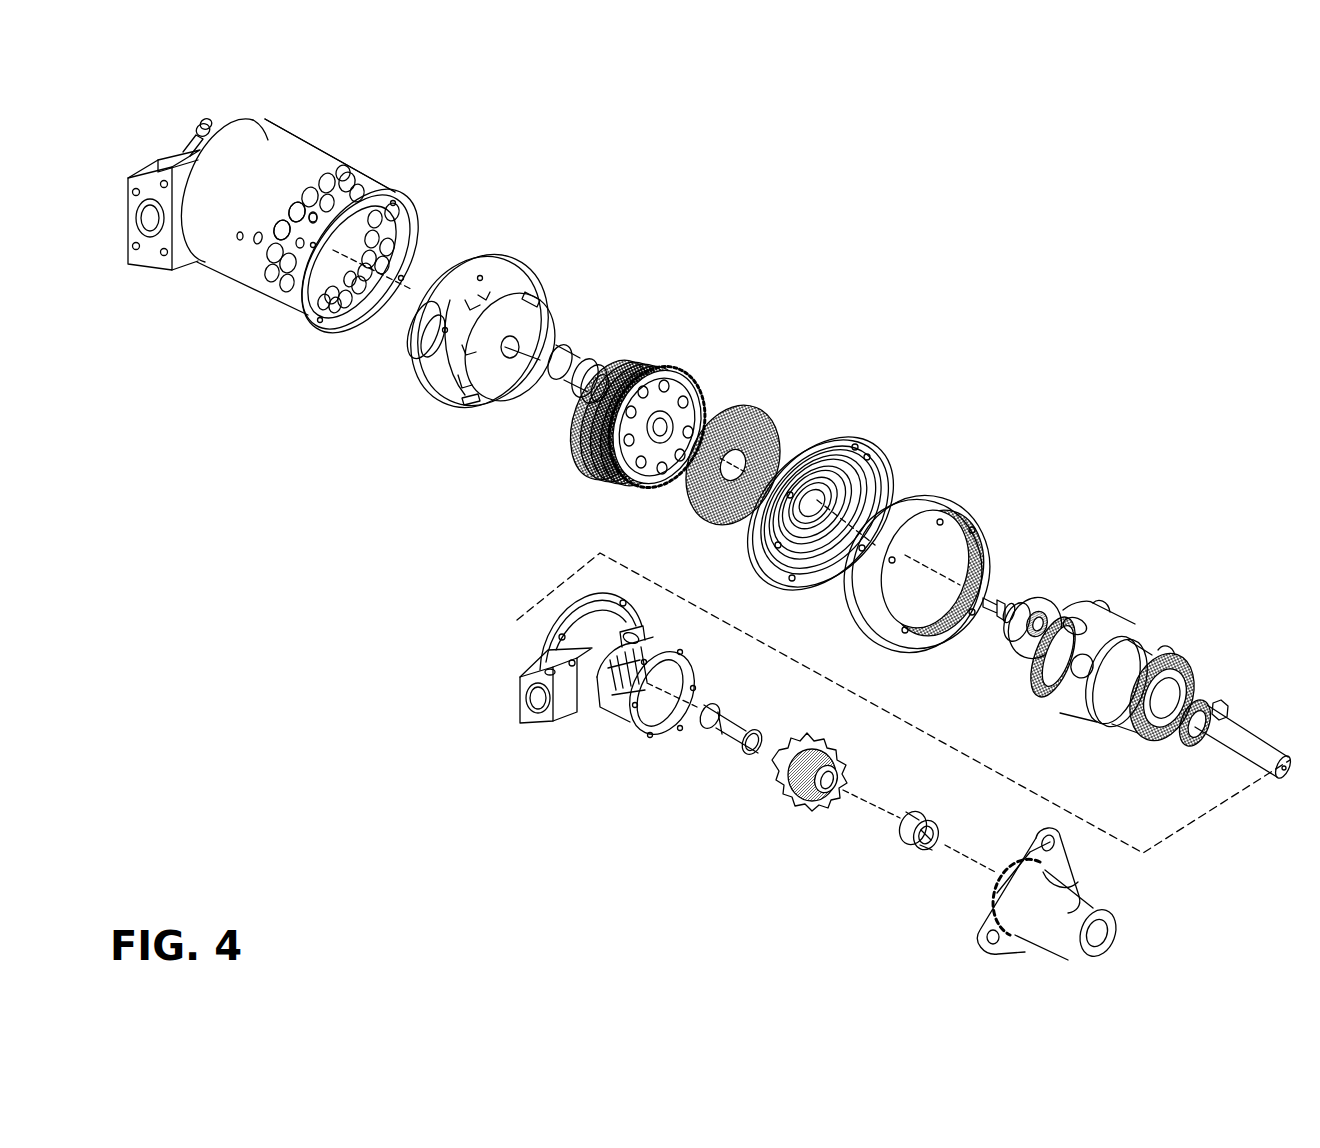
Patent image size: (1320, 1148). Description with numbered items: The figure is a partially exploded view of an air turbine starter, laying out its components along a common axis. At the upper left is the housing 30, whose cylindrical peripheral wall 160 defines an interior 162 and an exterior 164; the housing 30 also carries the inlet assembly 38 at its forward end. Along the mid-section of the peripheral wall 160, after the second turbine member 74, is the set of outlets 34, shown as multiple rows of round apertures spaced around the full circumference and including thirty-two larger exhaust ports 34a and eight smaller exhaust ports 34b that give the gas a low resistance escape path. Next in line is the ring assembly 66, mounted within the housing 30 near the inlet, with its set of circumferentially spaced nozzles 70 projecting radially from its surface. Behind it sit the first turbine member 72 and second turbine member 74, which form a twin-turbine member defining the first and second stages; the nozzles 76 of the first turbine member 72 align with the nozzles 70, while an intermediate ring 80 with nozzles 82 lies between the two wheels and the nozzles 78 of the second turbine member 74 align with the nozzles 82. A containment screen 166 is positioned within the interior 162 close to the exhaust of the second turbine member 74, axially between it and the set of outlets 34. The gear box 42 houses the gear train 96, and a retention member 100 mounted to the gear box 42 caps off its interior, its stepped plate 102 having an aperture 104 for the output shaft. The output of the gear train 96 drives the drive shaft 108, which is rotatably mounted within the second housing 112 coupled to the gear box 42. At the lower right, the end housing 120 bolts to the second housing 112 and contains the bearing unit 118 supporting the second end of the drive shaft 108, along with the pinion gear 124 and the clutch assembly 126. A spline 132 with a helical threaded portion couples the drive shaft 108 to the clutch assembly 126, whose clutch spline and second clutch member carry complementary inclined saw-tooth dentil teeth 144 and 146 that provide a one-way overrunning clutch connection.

The housing 30 is at (300, 114).
The set of outlets 34 is at (367, 177).
The larger exhaust ports 34a is at (313, 220).
The smaller exhaust ports 34b is at (293, 217).
The inlet assembly 38 is at (153, 177).
The gear box 42 is at (963, 500).
The ring assembly 66 is at (492, 252).
The nozzles 70 is at (436, 365).
The first turbine member 72 is at (616, 372).
The second turbine member 74 is at (695, 375).
The nozzles of the first turbine member 76 is at (578, 440).
The nozzles of the second turbine member 78 is at (625, 485).
The intermediate ring 80 is at (637, 357).
The nozzles of the intermediate ring 82 is at (613, 363).
The gear train 96 is at (1138, 674).
The retention member 100 is at (870, 488).
The plate 102 is at (828, 506).
The aperture 104 is at (832, 505).
The drive shaft 108 is at (1260, 753).
The second housing 112 is at (543, 713).
The bearing unit 118 is at (910, 840).
The end housing 120 is at (1113, 923).
The pinion gear 124 is at (747, 796).
The clutch assembly 126 is at (1197, 735).
The spline 132 is at (740, 733).
The dentil teeth 144 is at (1223, 703).
The dentil teeth 146 is at (770, 767).
The peripheral wall 160 is at (293, 167).
The interior 162 is at (340, 283).
The exterior 164 is at (257, 153).
The containment screen 166 is at (770, 410).